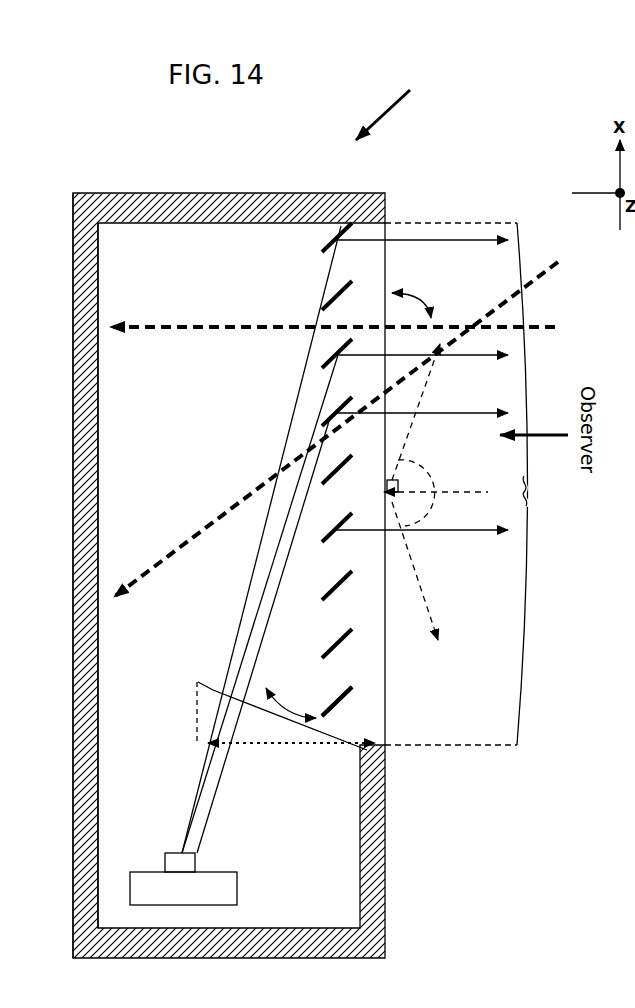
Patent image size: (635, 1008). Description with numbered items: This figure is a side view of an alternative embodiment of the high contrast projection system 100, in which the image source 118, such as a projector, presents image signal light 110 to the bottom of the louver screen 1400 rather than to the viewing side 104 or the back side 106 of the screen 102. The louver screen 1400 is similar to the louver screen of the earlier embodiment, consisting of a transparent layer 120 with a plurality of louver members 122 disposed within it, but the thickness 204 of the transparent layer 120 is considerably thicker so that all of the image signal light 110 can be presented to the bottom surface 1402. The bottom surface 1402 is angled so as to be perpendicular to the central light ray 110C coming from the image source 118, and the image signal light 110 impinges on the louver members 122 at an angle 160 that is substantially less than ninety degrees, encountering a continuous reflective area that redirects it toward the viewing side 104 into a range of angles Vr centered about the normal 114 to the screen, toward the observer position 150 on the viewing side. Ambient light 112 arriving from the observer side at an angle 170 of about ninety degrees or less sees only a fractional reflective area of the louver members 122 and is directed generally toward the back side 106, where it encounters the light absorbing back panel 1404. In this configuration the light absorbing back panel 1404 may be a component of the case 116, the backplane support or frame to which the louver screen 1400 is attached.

The high-contrast projection system 100 is at (389, 105).
The screen 102 is at (543, 484).
The viewing side 104 is at (388, 742).
The back side 106 is at (99, 256).
The image signal light 110 is at (196, 797).
The central light ray 110C is at (165, 752).
The ambient light 112 is at (355, 425).
The normal 114 is at (450, 492).
The case 116 is at (145, 193).
The image source 118 is at (188, 901).
The transparent layer 120 is at (357, 719).
The louver members 122 is at (354, 637).
The observer eye position 150 is at (386, 489).
The angle 160 is at (284, 712).
The angle 170 is at (420, 306).
The thickness 204 is at (291, 752).
The louver screen 1400 is at (388, 261).
The bottom surface 1402 is at (198, 683).
The light absorbing back panel 1404 is at (96, 452).